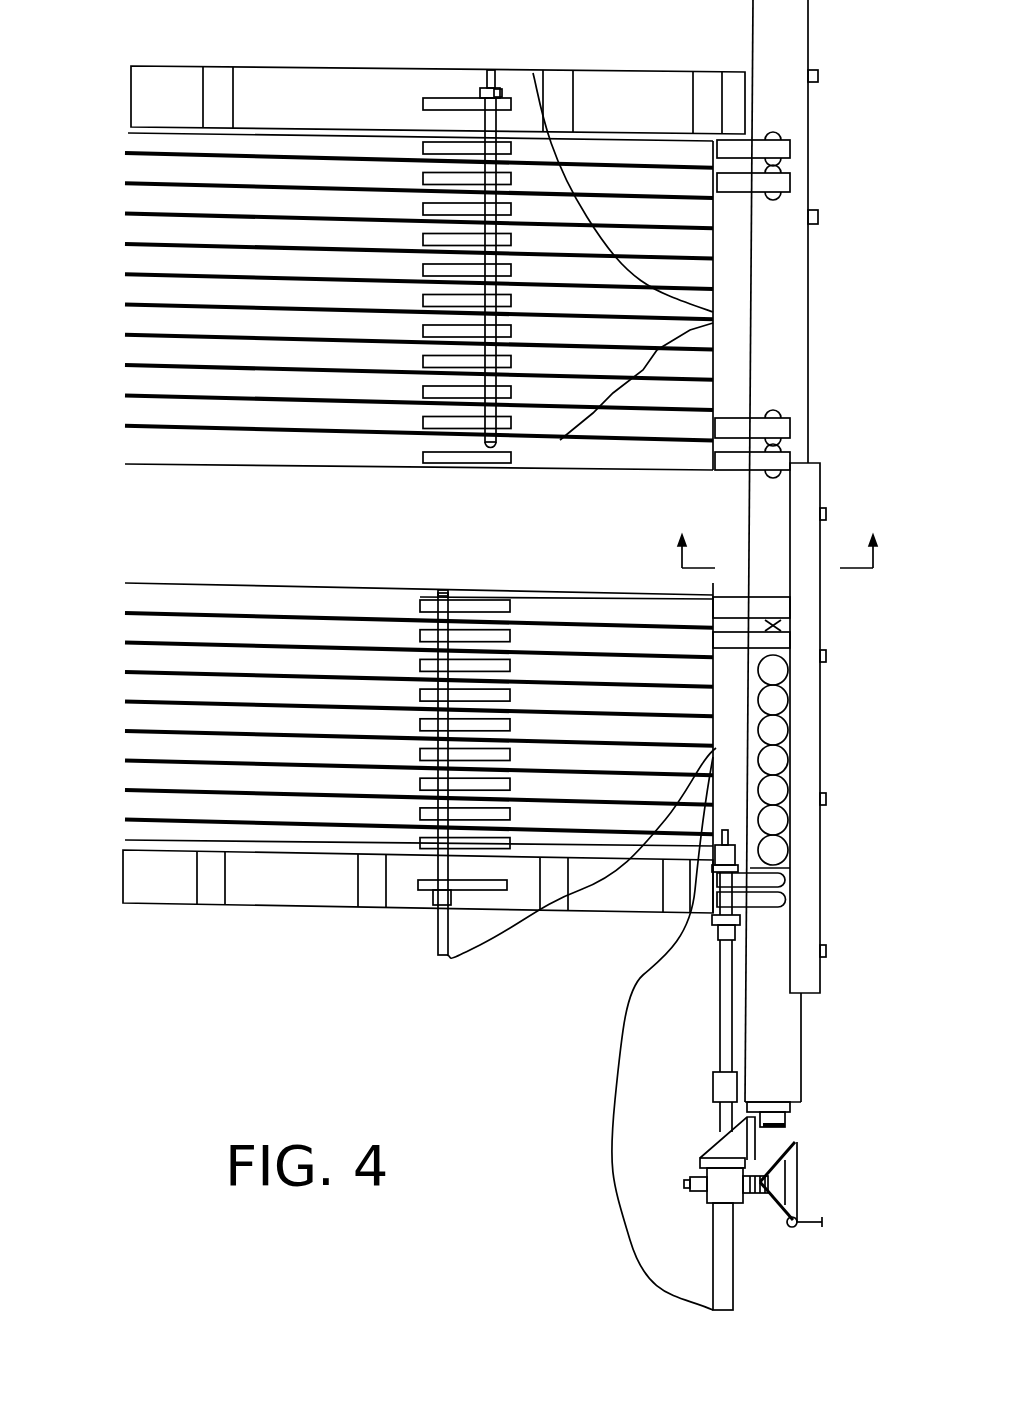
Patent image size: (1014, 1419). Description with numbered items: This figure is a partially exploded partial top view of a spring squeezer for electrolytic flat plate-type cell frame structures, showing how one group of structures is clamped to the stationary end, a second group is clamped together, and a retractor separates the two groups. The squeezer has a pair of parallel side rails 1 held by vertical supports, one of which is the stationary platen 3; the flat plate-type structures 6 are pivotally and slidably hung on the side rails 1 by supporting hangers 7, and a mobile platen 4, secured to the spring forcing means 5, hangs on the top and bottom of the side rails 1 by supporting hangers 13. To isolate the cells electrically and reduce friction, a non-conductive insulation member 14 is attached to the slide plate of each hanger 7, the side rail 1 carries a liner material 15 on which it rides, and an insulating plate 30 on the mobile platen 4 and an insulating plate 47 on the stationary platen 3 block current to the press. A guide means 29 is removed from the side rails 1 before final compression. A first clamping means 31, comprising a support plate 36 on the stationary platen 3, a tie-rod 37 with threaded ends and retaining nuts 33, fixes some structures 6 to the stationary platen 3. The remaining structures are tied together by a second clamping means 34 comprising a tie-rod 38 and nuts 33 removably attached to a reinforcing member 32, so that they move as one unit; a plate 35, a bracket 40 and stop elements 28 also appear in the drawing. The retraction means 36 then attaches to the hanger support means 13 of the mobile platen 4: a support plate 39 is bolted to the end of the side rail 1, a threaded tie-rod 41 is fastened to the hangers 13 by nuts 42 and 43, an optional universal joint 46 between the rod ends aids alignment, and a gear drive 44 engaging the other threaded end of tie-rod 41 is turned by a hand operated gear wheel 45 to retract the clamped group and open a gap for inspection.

The side rails 1 is at (800, 268).
The stationary platen 3 is at (283, 73).
The mobile platen 4 is at (283, 885).
The spring forcing means 5 is at (777, 551).
The flat plate-type structures 6 is at (92, 120).
The supporting hangers 7 is at (778, 150).
The supporting hangers 13 is at (780, 887).
The insulation member 14 is at (768, 142).
The liner material 15 is at (758, 298).
The stop tab 28 is at (822, 658).
The guide means 29 is at (816, 626).
The insulating plate 30 is at (135, 840).
The first clamping means 31 is at (642, 256).
The reinforcing member 32 is at (432, 465).
The retaining nuts 33 is at (497, 92).
The second clamping means 34 is at (598, 842).
The bottom paddle plate 35 is at (470, 888).
The retraction means 36 is at (452, 97).
The tie-rod 37 is at (487, 90).
The tie-rod 38 is at (440, 955).
The support plate 39 is at (788, 1117).
The mounting plate 40 is at (745, 1126).
The tie-rod 41 is at (735, 1030).
The nut 42 is at (745, 937).
The nut 43 is at (716, 906).
The gear drive 44 is at (712, 1190).
The gear wheel 45 is at (790, 1165).
The universal joint 46 is at (713, 1090).
The insulating plate 47 is at (128, 133).